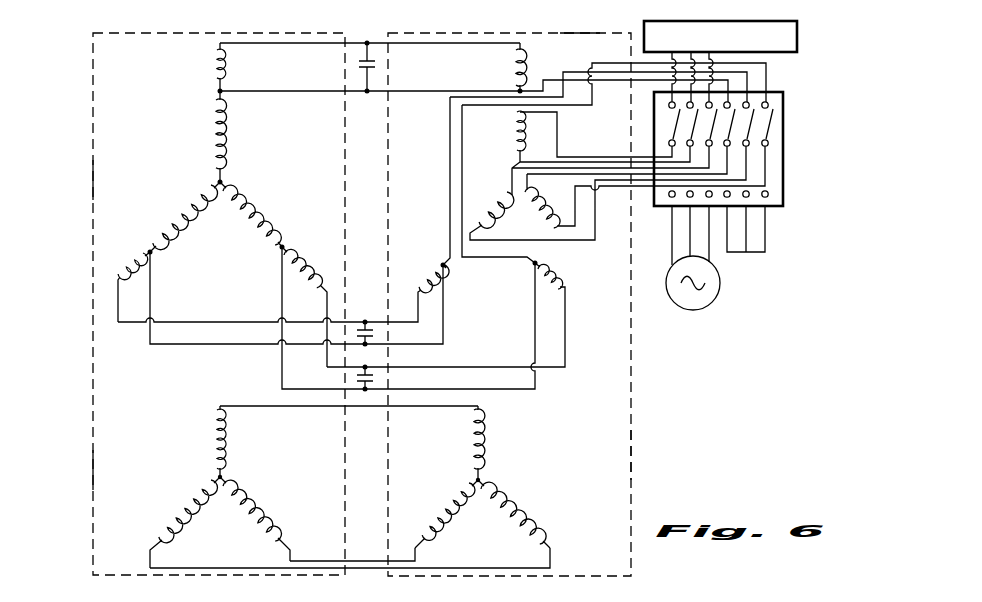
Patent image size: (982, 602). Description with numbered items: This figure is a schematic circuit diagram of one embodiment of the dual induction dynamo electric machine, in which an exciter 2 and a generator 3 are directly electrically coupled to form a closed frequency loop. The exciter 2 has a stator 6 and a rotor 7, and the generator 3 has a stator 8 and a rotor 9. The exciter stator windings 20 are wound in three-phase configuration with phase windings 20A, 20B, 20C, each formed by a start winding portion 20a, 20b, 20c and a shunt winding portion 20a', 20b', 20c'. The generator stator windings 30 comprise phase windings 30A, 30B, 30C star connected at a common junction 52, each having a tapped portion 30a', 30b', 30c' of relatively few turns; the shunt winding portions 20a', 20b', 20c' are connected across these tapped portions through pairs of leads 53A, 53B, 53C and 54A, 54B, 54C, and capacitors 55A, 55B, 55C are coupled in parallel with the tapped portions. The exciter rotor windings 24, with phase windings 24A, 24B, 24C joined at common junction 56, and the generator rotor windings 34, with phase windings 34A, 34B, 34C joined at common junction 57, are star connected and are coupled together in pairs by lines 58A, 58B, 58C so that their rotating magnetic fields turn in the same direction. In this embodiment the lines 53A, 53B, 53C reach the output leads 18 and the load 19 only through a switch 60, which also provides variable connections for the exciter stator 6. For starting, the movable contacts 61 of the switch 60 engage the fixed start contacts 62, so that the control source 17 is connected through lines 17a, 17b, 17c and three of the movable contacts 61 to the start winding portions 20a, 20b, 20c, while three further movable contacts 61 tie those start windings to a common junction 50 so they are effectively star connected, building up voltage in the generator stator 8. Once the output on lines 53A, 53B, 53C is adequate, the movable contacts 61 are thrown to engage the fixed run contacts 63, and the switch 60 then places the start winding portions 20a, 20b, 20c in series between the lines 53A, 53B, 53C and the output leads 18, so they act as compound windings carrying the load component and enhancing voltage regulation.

The exciter 2 is at (492, 32).
The generator 3 is at (120, 32).
The exciter stator 6 is at (568, 30).
The exciter rotor 7 is at (634, 455).
The generator stator 8 is at (90, 180).
The generator rotor 9 is at (90, 470).
The control source 17 is at (704, 267).
The line 17a is at (671, 228).
The line 17b is at (688, 243).
The line 17c is at (712, 262).
The output leads 18 is at (778, 58).
The electrical load 19 is at (797, 22).
The exciter stator windings 20 is at (581, 171).
The phase winding 20A is at (513, 76).
The shunt winding portion 20a' is at (550, 66).
The start winding portion 20a is at (588, 153).
The phase winding 20B is at (447, 228).
The start winding portion 20b is at (605, 191).
The shunt winding portion 20b' is at (423, 259).
The phase winding 20C is at (528, 268).
The start winding portion 20c is at (640, 190).
The shunt winding portion 20c' is at (566, 267).
The exciter rotor windings 24 is at (495, 477).
The phase winding 24A is at (489, 438).
The phase winding 24B is at (433, 525).
The phase winding 24C is at (530, 526).
The generator stator windings 30 is at (219, 205).
The phase winding 30A is at (210, 104).
The tapped portion 30a' is at (187, 71).
The phase winding 30B is at (175, 218).
The tapped portion 30b' is at (124, 273).
The phase winding 30C is at (278, 218).
The tapped portion 30c' is at (311, 296).
The generator rotor windings 34 is at (199, 487).
The phase winding 34A is at (212, 424).
The phase winding 34B is at (177, 526).
The phase winding 34C is at (270, 528).
The common junction 50 is at (758, 254).
The common junction 52 is at (224, 186).
The line 53A is at (255, 92).
The line 53B is at (152, 275).
The line 53C is at (281, 275).
The lead 54A is at (302, 46).
The lead 54B is at (134, 324).
The lead 54C is at (335, 292).
The capacitor 55A is at (360, 58).
The capacitor 55B is at (357, 328).
The capacitor 55C is at (375, 378).
The common junction 56 is at (478, 484).
The common junction 57 is at (221, 482).
The line 58A is at (244, 405).
The line 58B is at (254, 566).
The line 58C is at (313, 560).
The switch 60 is at (768, 158).
The movable contacts 61 is at (787, 122).
The fixed start contacts 62 is at (787, 178).
The fixed run contacts 63 is at (786, 93).